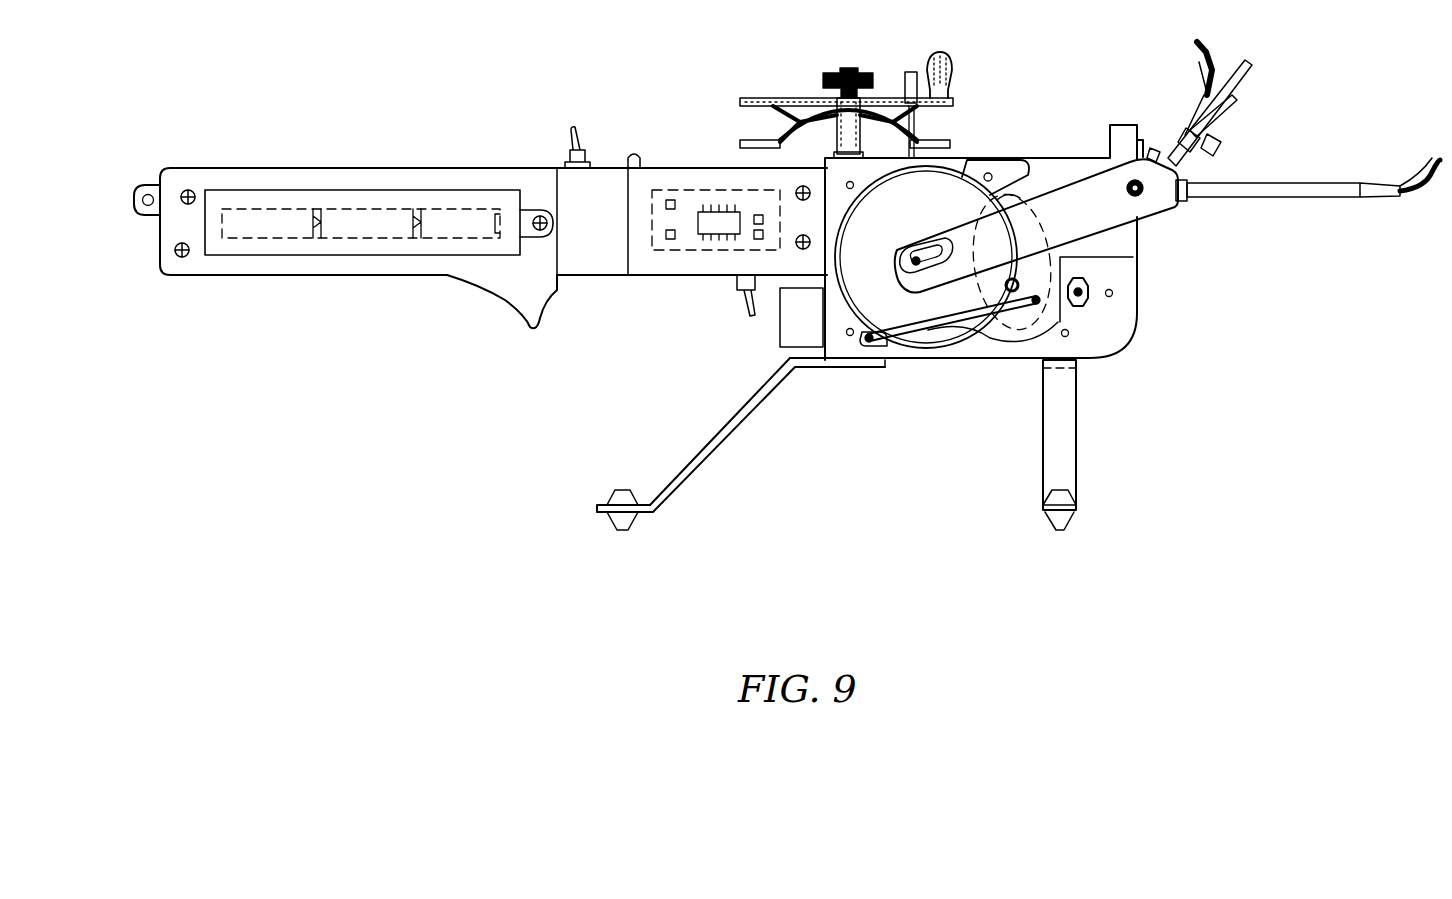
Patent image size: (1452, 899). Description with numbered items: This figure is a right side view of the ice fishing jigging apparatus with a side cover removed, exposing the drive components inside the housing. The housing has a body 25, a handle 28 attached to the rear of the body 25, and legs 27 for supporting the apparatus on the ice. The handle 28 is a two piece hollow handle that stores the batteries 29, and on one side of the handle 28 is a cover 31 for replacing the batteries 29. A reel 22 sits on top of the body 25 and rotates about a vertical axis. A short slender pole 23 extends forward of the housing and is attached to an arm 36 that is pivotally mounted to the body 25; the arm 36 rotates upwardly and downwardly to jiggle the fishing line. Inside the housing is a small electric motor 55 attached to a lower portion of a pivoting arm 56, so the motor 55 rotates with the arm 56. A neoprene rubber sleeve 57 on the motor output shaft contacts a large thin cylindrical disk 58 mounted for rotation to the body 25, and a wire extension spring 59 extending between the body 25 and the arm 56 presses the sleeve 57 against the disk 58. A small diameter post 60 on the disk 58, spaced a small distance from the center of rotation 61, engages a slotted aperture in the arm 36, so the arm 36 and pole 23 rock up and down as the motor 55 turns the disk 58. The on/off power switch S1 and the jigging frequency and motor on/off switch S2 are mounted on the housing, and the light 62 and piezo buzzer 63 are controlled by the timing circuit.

The reel 22 is at (793, 100).
The short slender pole 23 is at (1228, 198).
The body 25 is at (1138, 258).
The legs 27 is at (713, 432).
The handle 28 is at (318, 168).
The batteries 29 is at (378, 238).
The cover 31 is at (448, 188).
The arm 36 is at (1087, 162).
The electric motor 55 is at (960, 217).
The arm 56 is at (1047, 317).
The neoprene rubber sleeve 57 is at (1012, 285).
The large thin cylindrical disk 58 is at (962, 177).
The wire extension spring 59 is at (950, 327).
The post 60 is at (920, 268).
The center of rotation 61 is at (927, 260).
The light (LED) 62 is at (633, 155).
The piezo buzzer 63 is at (749, 316).
The on/off power switch S1 is at (571, 128).
The jigging frequency and motor on/off switch S2 is at (1083, 304).